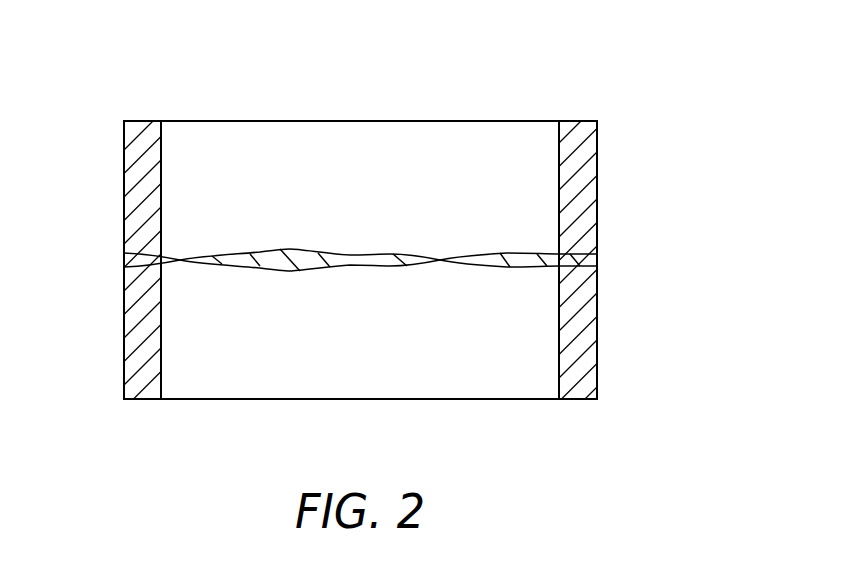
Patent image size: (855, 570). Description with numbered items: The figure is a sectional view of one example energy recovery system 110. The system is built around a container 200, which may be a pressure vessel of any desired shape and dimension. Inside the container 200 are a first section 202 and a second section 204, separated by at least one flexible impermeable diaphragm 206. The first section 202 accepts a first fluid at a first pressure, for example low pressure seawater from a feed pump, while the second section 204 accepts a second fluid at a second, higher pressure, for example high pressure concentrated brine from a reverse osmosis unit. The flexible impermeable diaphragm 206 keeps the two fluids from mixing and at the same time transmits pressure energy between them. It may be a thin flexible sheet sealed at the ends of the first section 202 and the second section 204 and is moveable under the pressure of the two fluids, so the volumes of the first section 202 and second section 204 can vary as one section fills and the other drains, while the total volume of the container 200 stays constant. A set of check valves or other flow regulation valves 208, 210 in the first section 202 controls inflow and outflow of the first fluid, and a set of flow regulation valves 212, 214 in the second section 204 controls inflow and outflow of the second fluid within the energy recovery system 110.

The energy recovery system 110 is at (682, 43).
The container 200 is at (360, 121).
The first section 202 is at (235, 385).
The second section 204 is at (235, 137).
The flexible impermeable diaphragm 206 is at (590, 262).
The check valve 208 is at (130, 352).
The check valve 210 is at (586, 359).
The flow regulation valve 212 is at (130, 164).
The flow regulation valve 214 is at (586, 168).